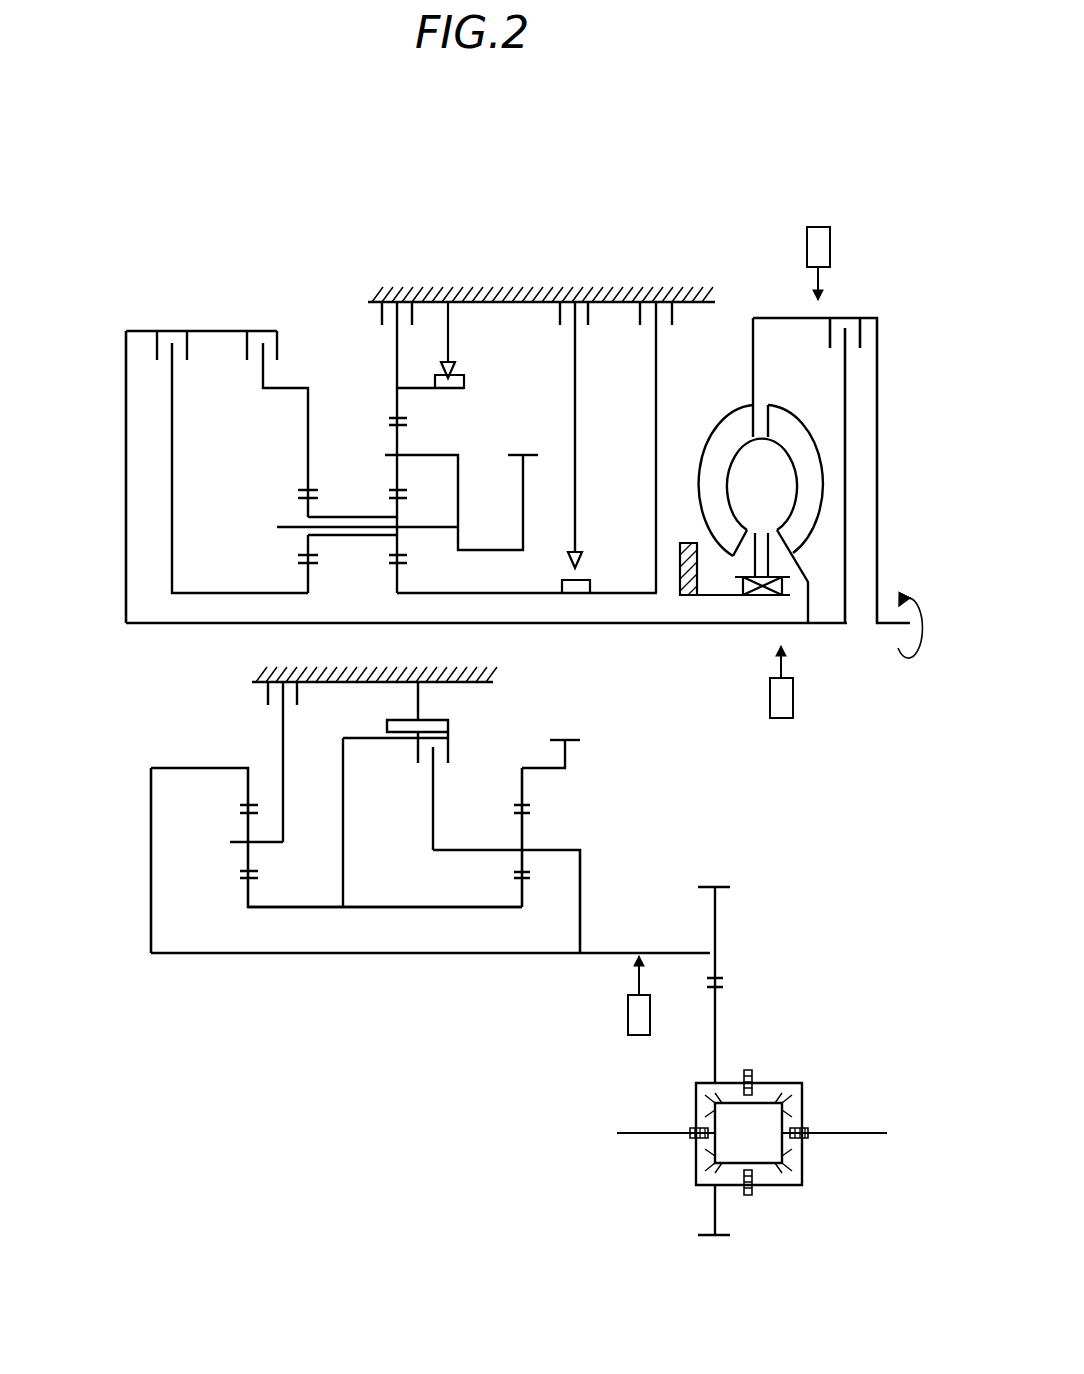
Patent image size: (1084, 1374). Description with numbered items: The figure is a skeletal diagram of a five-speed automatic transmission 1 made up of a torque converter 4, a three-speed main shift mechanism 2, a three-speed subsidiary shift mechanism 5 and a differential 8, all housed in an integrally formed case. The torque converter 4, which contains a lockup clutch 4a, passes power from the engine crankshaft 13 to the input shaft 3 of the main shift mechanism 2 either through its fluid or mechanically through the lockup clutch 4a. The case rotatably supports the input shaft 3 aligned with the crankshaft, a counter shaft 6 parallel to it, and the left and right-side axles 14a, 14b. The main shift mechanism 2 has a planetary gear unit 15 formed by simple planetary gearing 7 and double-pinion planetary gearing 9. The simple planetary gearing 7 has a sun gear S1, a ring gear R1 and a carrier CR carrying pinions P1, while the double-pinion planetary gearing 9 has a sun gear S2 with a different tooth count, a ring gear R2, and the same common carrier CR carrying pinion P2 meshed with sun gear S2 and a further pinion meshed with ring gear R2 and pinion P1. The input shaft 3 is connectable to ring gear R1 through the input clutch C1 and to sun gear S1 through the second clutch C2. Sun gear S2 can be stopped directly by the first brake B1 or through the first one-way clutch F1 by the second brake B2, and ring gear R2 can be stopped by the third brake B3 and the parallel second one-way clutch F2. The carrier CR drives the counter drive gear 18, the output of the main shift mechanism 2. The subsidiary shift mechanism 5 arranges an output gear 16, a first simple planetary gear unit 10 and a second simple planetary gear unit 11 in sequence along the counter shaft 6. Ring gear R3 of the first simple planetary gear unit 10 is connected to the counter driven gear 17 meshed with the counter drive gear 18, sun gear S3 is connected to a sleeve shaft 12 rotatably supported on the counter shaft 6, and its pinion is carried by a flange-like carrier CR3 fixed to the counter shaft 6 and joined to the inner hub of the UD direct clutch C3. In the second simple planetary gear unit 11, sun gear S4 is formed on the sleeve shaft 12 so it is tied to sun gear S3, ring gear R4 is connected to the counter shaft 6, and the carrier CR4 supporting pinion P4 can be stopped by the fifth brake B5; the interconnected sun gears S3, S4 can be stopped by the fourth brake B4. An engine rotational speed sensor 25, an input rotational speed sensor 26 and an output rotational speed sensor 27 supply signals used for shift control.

The automatic transmission 1 is at (508, 195).
The main shift mechanism 2 is at (391, 398).
The input shaft 3 is at (607, 625).
The torque converter 4 is at (760, 300).
The lockup clutch 4a is at (852, 333).
The subsidiary shift mechanism 5 is at (103, 718).
The counter shaft 6 is at (455, 958).
The simple planetary gearing 7 is at (307, 407).
The differential 8 is at (856, 1046).
The double-pinion planetary gearing 9 is at (464, 406).
The first simple planetary gear unit 10 is at (550, 822).
The second simple planetary gear unit 11 is at (297, 827).
The sleeve shaft 12 is at (390, 908).
The engine crankshaft 13 is at (893, 630).
The left-side axle 14a is at (647, 1135).
The right-side axle 14b is at (847, 1135).
The planetary gear unit 15 is at (305, 195).
The output gear 16 is at (718, 895).
The counter driven gear 17 is at (565, 738).
The counter drive gear 18 is at (524, 472).
The engine rotational speed sensor 25 is at (818, 226).
The input rotational speed sensor 26 is at (793, 700).
The output rotational speed sensor 27 is at (628, 1032).
The input clutch C1 is at (274, 409).
The second clutch C2 is at (230, 447).
The UD direct clutch C3 is at (395, 819).
The first brake B1 is at (655, 425).
The second brake B2 is at (573, 404).
The third brake B3 is at (395, 291).
The fourth brake B4 is at (417, 686).
The fifth brake B5 is at (281, 741).
The first one-way clutch F1 is at (586, 565).
The second one-way clutch F2 is at (447, 322).
The ring gear R1 is at (306, 489).
The ring gear R2 is at (400, 423).
The ring gear R3 is at (522, 768).
The ring gear R4 is at (193, 767).
The pinion P1 is at (306, 514).
The pinion P2 is at (388, 548).
The pinion P4 is at (262, 845).
The sun gear S1 is at (306, 561).
The sun gear S2 is at (404, 571).
The sun gear S3 is at (526, 895).
The sun gear S4 is at (246, 882).
The common carrier CR is at (460, 489).
The carrier CR3 is at (585, 876).
The carrier CR4 is at (282, 766).